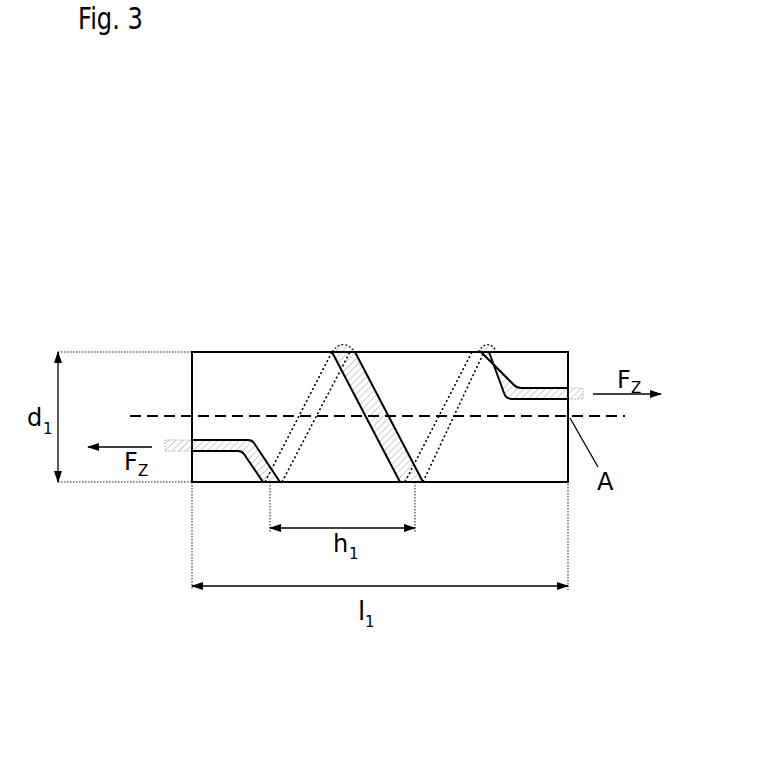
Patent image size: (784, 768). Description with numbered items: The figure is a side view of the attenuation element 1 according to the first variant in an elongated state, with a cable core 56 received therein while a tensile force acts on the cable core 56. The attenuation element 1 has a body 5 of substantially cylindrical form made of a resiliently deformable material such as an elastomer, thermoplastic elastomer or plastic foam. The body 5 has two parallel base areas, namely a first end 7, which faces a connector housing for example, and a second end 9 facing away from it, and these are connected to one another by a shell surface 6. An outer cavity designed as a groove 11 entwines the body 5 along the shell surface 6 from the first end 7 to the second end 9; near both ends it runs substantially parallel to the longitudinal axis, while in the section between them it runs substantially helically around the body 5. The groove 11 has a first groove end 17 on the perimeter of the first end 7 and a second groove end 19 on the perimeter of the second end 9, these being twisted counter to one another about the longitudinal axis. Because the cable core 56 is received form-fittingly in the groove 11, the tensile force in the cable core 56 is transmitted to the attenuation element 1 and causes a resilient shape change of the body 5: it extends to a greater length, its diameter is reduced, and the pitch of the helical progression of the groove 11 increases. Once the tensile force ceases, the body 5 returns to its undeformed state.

The attenuation element 1 is at (136, 272).
The body 5 is at (510, 312).
The shell surface 6 is at (283, 350).
The first end 7 is at (190, 415).
The second end 9 is at (572, 368).
The outer cavity (groove) 11 is at (365, 368).
The first groove end 17 is at (190, 440).
The second groove end 19 is at (570, 388).
The cable core 56 is at (343, 346).